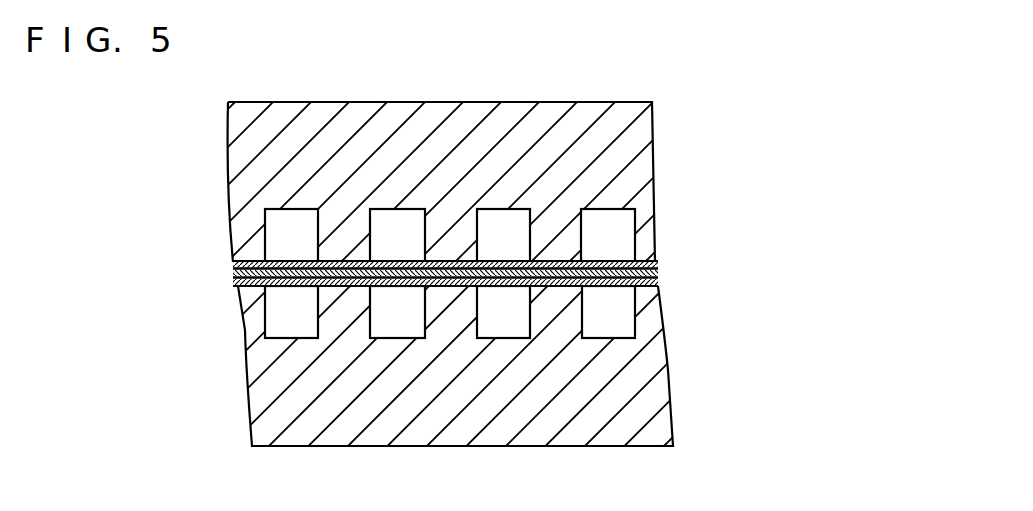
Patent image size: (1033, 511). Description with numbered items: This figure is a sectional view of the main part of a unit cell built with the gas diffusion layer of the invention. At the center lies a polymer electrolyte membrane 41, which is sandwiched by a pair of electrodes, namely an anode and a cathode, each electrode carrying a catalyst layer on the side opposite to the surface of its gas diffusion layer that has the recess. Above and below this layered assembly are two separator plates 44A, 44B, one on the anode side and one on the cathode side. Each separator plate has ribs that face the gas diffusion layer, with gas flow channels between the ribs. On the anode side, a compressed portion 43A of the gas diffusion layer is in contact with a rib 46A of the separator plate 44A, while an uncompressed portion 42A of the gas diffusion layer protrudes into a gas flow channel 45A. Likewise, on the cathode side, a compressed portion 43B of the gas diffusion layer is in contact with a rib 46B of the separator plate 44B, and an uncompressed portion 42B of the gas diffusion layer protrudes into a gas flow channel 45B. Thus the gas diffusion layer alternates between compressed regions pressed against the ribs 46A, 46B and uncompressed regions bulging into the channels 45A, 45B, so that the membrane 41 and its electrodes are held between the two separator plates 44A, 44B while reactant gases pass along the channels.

The polymer electrolyte membrane 41 is at (656, 276).
The uncompressed portion of the gas diffusion layer 42A is at (607, 263).
The uncompressed portion of the gas diffusion layer 42B is at (607, 289).
The compressed portion of the gas diffusion layer 43A is at (553, 266).
The compressed portion of the gas diffusion layer 43B is at (613, 287).
The separator plate 44A is at (512, 102).
The separator plate 44B is at (558, 448).
The gas flow channel 45A is at (398, 228).
The gas flow channel 45B is at (400, 327).
The rib 46A is at (340, 233).
The rib 46B is at (338, 317).